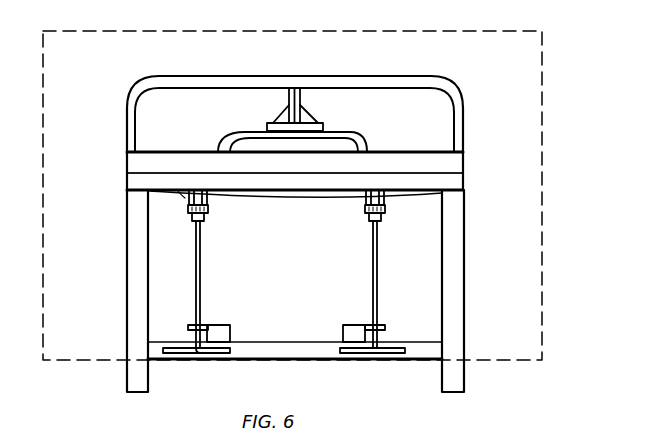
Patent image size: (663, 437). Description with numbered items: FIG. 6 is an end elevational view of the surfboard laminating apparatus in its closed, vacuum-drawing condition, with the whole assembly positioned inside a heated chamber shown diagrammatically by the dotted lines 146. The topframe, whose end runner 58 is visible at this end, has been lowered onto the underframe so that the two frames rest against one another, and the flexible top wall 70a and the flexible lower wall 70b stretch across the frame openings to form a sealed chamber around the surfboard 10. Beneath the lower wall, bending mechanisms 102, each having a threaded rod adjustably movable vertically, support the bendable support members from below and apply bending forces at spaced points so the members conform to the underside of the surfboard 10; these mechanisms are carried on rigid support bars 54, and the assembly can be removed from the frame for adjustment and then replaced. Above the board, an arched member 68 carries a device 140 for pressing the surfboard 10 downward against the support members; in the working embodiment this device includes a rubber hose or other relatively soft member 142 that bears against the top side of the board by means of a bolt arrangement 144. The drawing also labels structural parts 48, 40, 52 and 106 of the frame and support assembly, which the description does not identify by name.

The heated chamber 146 is at (543, 65).
The frame legs 48 is at (465, 272).
The member 68 is at (423, 77).
The end runner 58 is at (457, 166).
The lower rail / support bar 40 is at (460, 185).
The flexible top wall 70a is at (194, 150).
The flexible wall 70b is at (352, 196).
The surfboard 10 is at (362, 134).
The relatively soft member 142 is at (267, 127).
The device 140 is at (305, 113).
The bolt arrangement 144 is at (288, 109).
The bending mechanisms 102 is at (204, 252).
The rigid support bars 54 is at (215, 325).
The base plate 106 is at (178, 355).
The crossbar 52 is at (252, 345).